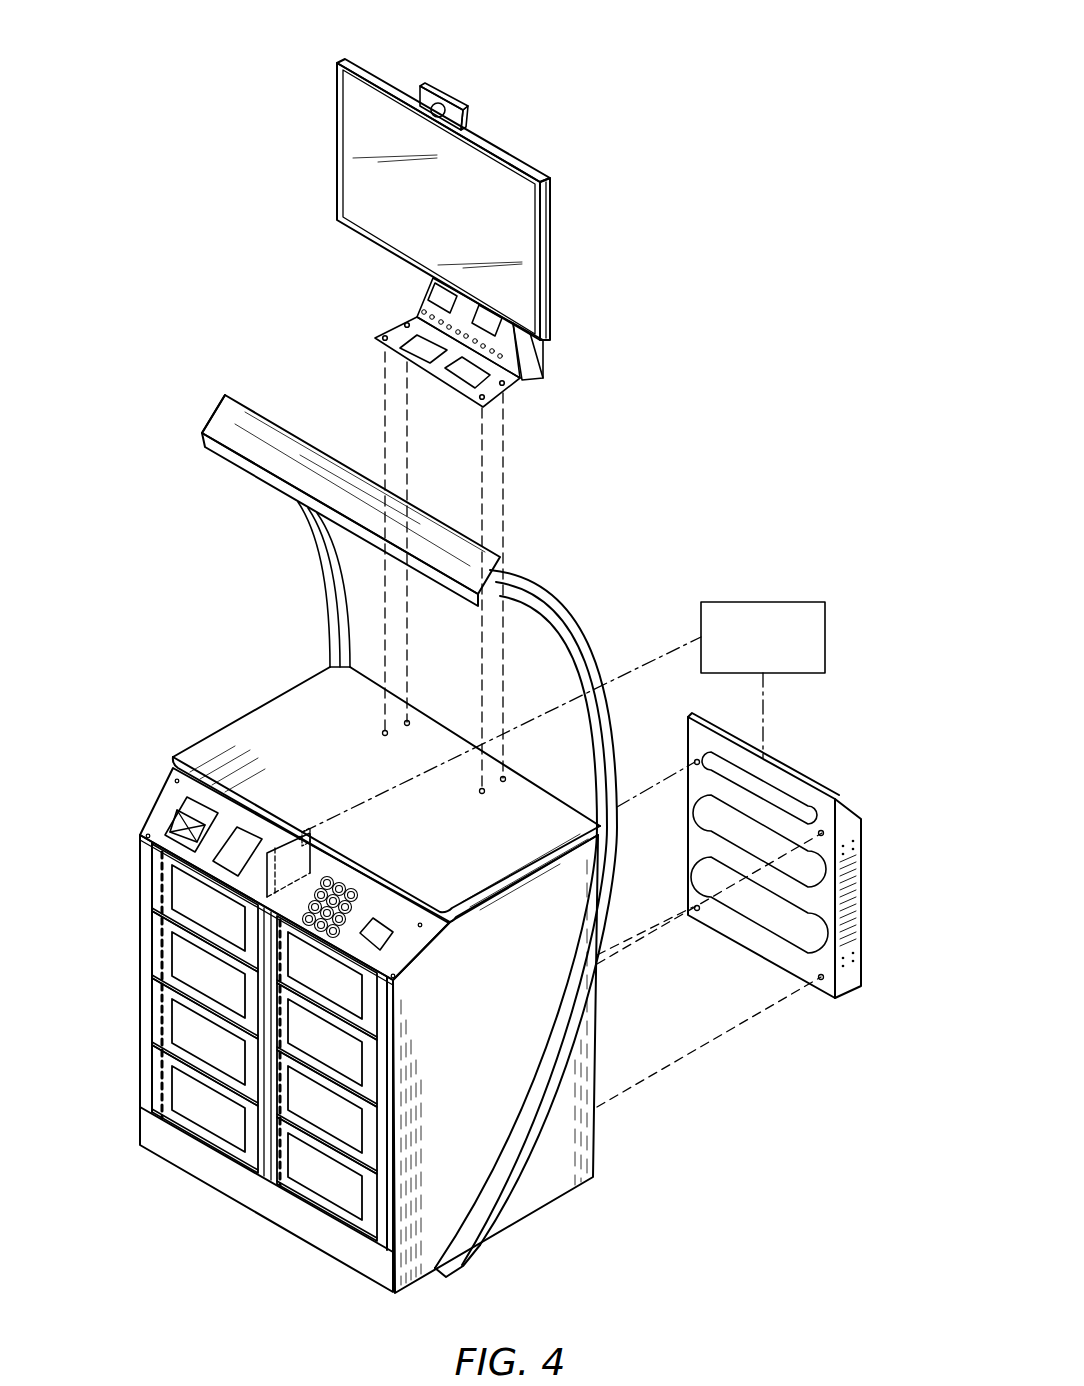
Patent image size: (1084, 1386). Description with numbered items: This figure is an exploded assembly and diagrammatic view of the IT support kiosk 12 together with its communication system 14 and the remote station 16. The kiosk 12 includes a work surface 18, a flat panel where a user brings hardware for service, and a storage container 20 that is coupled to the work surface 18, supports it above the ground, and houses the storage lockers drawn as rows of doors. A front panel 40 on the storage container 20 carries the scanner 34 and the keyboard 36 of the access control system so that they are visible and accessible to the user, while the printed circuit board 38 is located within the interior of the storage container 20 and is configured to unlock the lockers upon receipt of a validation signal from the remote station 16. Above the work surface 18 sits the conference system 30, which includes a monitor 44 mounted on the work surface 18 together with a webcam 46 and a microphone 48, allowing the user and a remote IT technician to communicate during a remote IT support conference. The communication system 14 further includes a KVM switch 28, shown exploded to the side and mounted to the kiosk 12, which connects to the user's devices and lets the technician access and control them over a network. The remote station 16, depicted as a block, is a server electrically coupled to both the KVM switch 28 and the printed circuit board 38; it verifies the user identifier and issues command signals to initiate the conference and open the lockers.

The IT support kiosk 12 is at (194, 361).
The communication system 14 is at (663, 79).
The remote station 16 is at (764, 602).
The work surface 18 is at (277, 733).
The storage container 20 is at (127, 835).
The KVM switch 28 is at (846, 806).
The conference system 30 is at (352, 56).
The scanner 34 is at (184, 841).
The keyboard 36 is at (314, 900).
The printed circuit board 38 is at (259, 878).
The front panel 40 is at (170, 803).
The monitor 44 is at (512, 146).
The webcam 46 is at (451, 84).
The microphone 48 is at (457, 106).